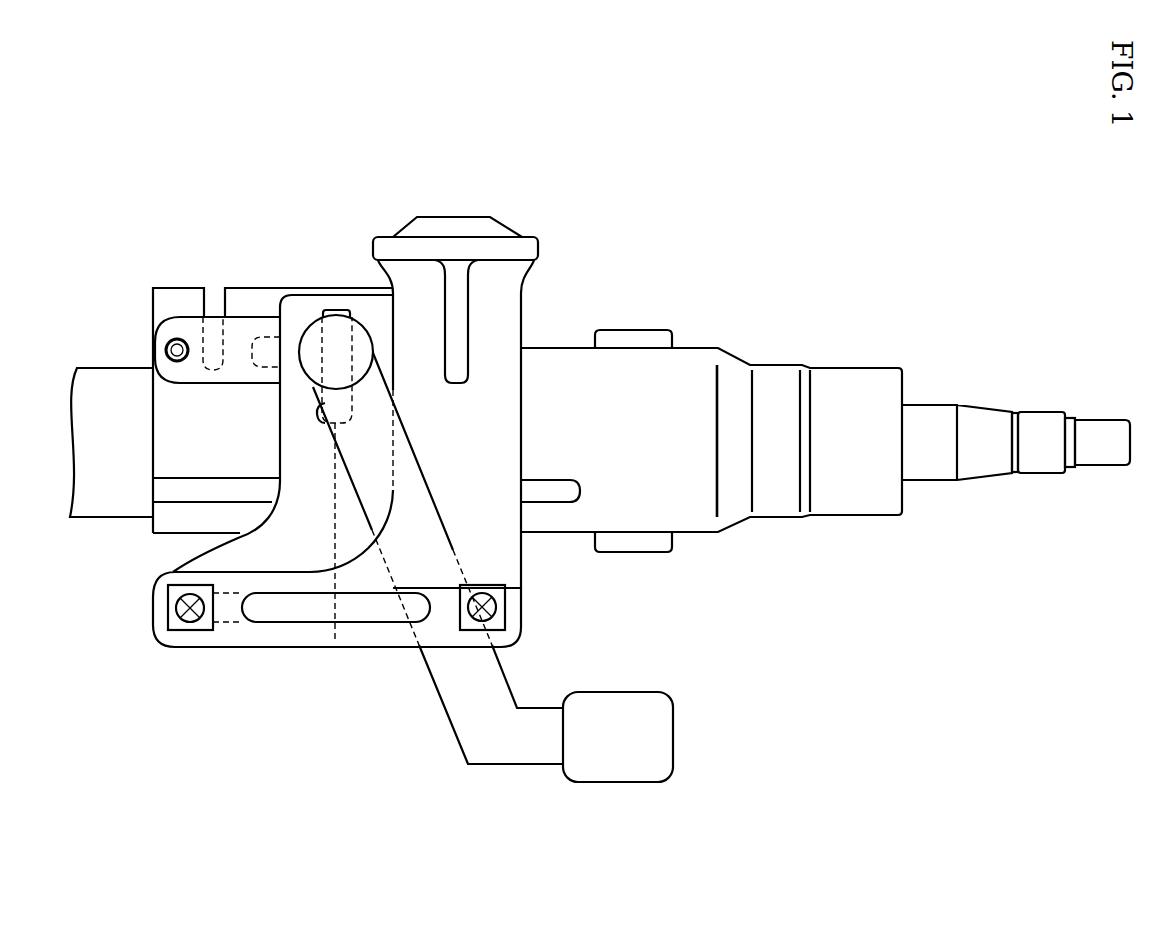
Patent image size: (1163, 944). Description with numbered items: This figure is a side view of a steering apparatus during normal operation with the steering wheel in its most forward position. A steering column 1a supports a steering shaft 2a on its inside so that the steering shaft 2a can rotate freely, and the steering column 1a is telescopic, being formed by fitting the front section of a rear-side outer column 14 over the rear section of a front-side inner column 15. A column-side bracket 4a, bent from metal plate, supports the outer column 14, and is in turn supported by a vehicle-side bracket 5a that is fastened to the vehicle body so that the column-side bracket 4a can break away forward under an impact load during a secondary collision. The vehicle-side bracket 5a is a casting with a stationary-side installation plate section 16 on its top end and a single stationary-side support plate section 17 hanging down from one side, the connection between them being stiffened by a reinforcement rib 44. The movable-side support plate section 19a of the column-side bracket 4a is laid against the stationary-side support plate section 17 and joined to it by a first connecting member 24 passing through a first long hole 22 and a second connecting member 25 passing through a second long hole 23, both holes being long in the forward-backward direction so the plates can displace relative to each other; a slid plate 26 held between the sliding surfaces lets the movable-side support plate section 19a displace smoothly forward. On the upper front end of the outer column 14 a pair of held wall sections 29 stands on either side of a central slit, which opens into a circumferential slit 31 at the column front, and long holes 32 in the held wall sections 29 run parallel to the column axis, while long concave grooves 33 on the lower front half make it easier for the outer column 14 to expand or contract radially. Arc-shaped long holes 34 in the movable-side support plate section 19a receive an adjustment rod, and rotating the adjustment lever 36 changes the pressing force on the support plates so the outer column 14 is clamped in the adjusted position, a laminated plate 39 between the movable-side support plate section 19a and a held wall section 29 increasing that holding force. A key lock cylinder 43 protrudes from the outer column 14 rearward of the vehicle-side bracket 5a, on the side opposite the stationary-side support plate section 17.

The steering column 1a is at (685, 363).
The steering shaft 2a is at (933, 418).
The column-side bracket 4a is at (379, 306).
The vehicle-side bracket 5a is at (513, 297).
The outer column 14 is at (707, 500).
The inner column 15 is at (92, 505).
The stationary-side installation plate section 16 is at (460, 242).
The stationary-side support plate section 17 is at (503, 472).
The movable-side support plate section 19a is at (307, 533).
The first long hole 22 is at (207, 623).
The second long hole 23 is at (445, 612).
The first connecting member 24 is at (175, 610).
The second connecting member 25 is at (495, 630).
The slid plate 26 is at (175, 590).
The held wall sections 29 is at (237, 295).
The slit 31 is at (205, 297).
The long holes 32 is at (268, 317).
The long concave grooves 33 is at (187, 492).
The long holes in the up-down direction 34 is at (335, 615).
The adjustment lever 36 is at (530, 722).
The laminated plate 39 is at (240, 348).
The key lock cylinder 43 is at (633, 338).
The reinforcement rib 44 is at (457, 307).